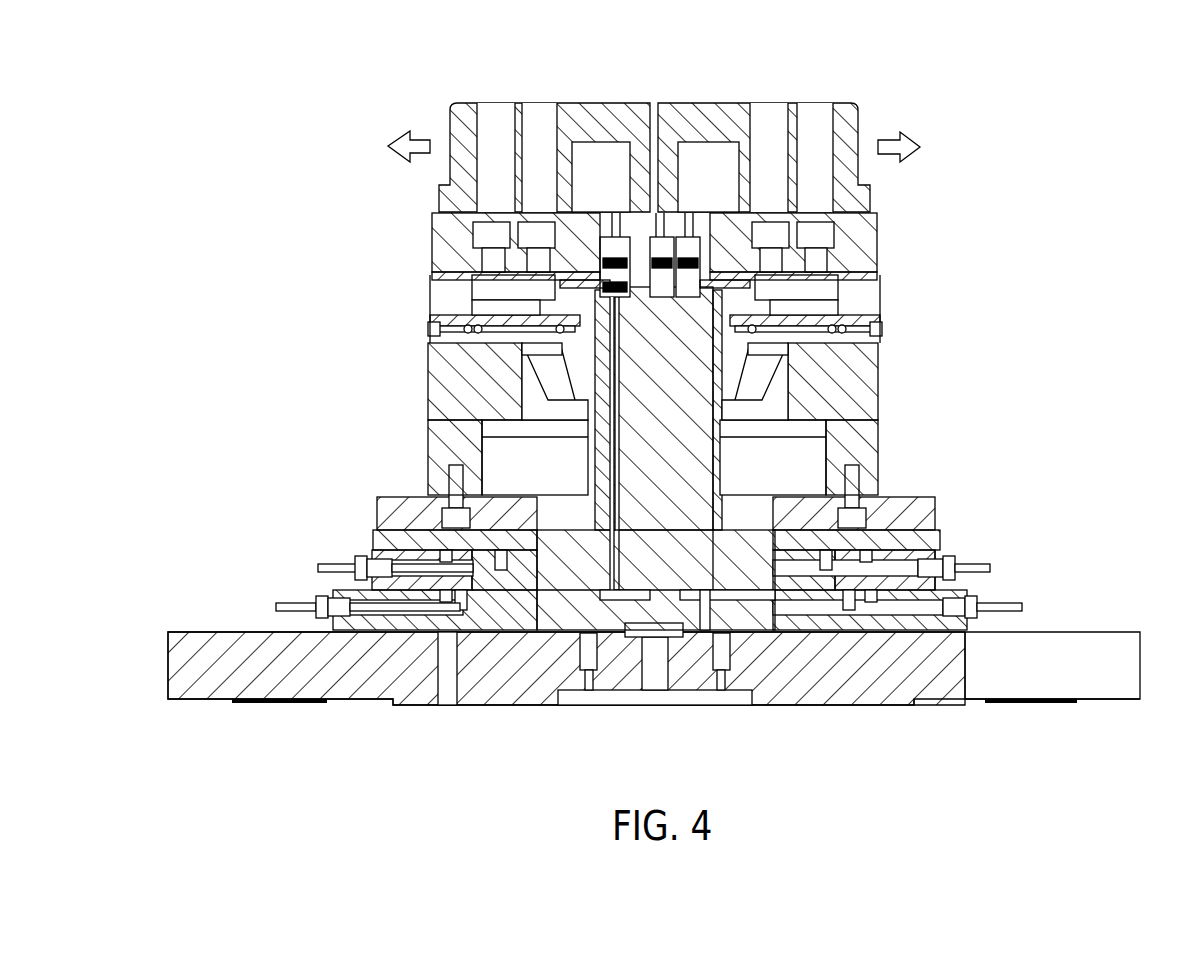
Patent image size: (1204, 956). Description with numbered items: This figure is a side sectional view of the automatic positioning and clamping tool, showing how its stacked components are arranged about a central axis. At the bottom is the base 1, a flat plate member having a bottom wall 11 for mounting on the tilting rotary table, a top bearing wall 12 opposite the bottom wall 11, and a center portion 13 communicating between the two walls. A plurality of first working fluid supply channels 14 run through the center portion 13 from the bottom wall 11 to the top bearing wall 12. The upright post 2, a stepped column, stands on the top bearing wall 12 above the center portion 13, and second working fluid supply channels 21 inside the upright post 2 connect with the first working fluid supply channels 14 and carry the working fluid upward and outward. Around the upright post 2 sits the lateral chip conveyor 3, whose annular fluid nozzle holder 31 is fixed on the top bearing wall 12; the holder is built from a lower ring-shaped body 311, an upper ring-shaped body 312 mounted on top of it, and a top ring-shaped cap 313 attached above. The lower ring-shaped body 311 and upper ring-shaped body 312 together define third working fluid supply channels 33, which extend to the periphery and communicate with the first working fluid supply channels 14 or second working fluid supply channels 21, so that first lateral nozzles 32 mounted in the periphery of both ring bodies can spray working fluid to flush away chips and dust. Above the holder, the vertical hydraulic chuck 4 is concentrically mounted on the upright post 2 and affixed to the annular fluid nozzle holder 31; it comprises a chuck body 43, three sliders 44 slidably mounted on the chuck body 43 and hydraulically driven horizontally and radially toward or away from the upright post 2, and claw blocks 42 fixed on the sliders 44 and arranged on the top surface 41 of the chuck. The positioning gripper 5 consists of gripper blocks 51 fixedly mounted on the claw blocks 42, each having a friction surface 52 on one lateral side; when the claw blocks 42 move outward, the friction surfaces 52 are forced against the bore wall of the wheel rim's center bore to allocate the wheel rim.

The base 1 is at (820, 710).
The bottom wall 11 is at (885, 705).
The top bearing wall 12 is at (1090, 630).
The center portion 13 is at (650, 670).
The first working fluid supply channel 14 is at (585, 646).
The upright post 2 is at (722, 426).
The second working fluid supply channel 21 is at (603, 486).
The lateral chip conveyor 3 is at (655, 594).
The annular fluid nozzle holder 31 is at (938, 518).
The lower ring-shaped body 311 is at (948, 624).
The upper ring-shaped body 312 is at (937, 547).
The top ring-shaped cap 313 is at (908, 528).
The first lateral nozzle 32 is at (337, 565).
The third working fluid supply channel 33 is at (393, 573).
The vertical hydraulic chuck 4 is at (649, 341).
The top surface 41 is at (850, 268).
The claw block 42 is at (458, 245).
The chuck body 43 is at (455, 393).
The slider 44 is at (478, 322).
The positioning gripper 5 is at (649, 130).
The gripper block 51 is at (617, 118).
The friction surface 52 is at (452, 128).